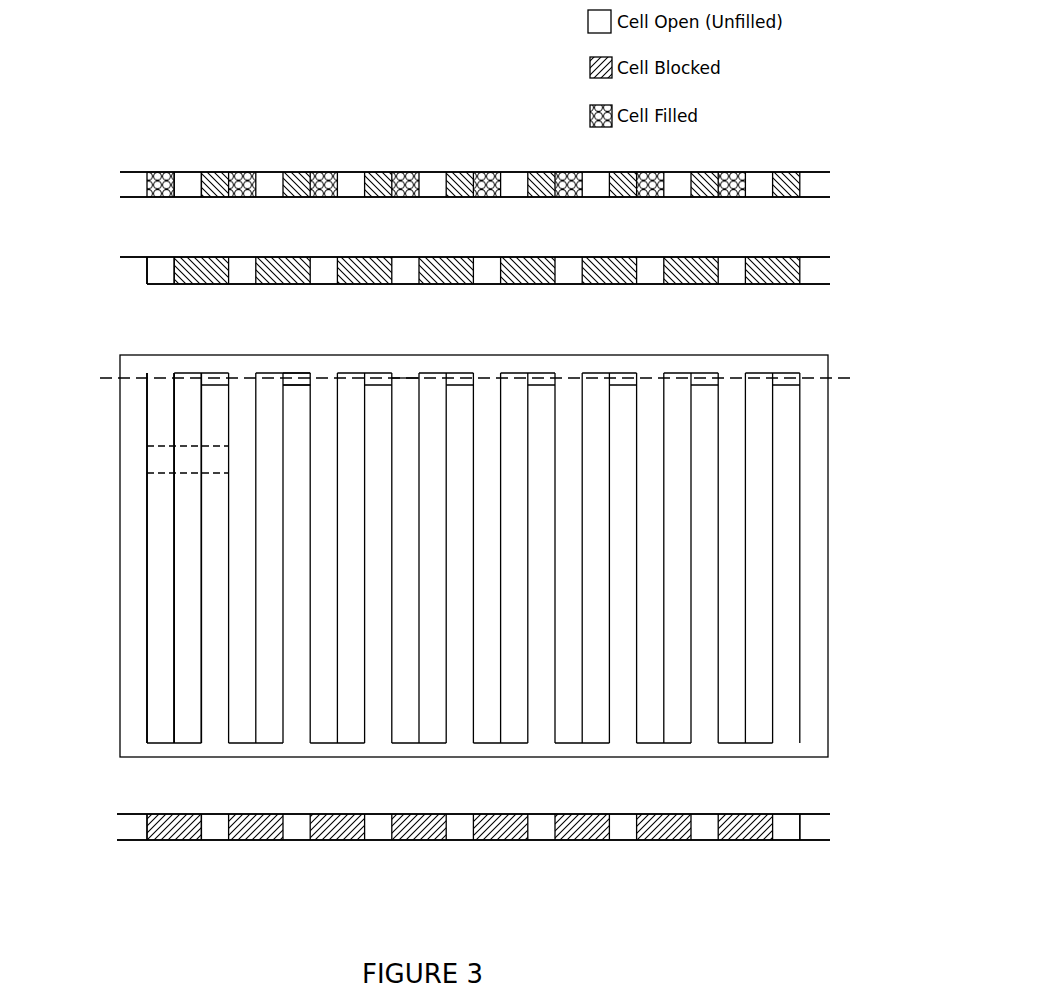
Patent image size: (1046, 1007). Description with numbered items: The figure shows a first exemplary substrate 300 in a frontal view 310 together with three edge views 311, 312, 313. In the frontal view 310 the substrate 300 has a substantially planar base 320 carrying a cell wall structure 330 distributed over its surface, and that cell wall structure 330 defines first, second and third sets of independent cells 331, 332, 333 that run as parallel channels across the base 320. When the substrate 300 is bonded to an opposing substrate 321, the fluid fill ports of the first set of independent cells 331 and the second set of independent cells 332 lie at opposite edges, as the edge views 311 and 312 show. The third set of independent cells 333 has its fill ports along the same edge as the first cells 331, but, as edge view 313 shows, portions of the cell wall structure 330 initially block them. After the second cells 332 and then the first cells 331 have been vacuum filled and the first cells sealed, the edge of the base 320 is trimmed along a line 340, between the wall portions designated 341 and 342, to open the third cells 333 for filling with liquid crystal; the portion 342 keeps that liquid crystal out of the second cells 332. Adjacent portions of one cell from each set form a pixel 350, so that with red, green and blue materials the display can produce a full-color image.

The first exemplary substrate 300 is at (828, 490).
The frontal view 310 is at (838, 357).
The edge view 311 is at (838, 262).
The edge view 312 is at (835, 816).
The edge view 313 is at (838, 179).
The substantially planar base 320 is at (128, 175).
The opposing substrate 321 is at (128, 198).
The cell wall structure 330 is at (147, 276).
The first set of independent cells 331 is at (165, 276).
The second set of independent cells 332 is at (184, 824).
The third set of independent cells 333 is at (193, 187).
The line 340 is at (400, 377).
The portion of the cell wall structure 341 is at (297, 368).
The portion of the cell wall structure 342 is at (303, 384).
The pixel 350 is at (165, 473).